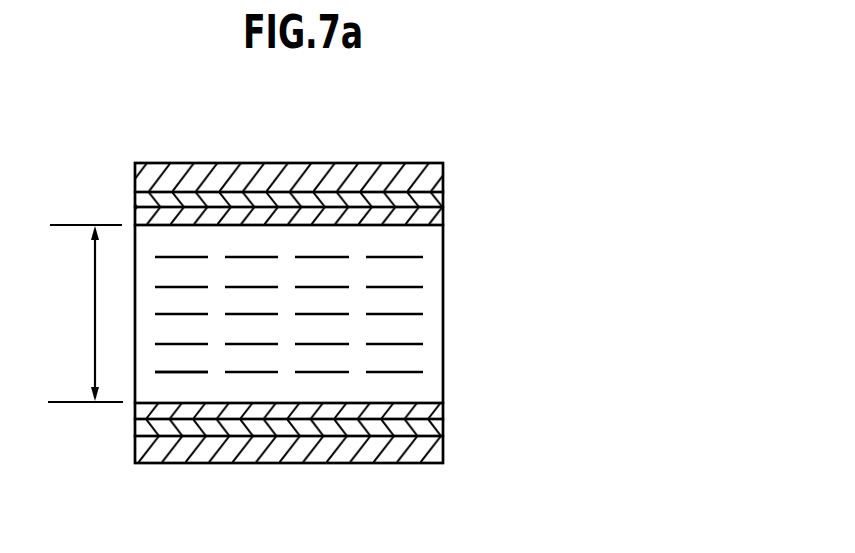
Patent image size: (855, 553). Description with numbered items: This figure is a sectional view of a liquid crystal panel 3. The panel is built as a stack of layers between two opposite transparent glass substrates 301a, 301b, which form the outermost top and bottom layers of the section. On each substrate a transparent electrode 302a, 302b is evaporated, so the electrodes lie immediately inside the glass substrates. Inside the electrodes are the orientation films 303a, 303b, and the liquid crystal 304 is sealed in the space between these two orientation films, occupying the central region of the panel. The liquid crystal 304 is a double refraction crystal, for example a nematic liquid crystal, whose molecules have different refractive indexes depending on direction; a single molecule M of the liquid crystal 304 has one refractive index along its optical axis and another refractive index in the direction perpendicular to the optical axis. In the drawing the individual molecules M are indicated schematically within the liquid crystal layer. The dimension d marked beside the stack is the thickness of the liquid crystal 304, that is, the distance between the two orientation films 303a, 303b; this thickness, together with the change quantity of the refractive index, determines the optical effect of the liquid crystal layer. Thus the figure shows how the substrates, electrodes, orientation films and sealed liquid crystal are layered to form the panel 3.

The liquid crystal panel 3 is at (350, 148).
The transparent glass substrate 301a is at (443, 182).
The transparent electrode 302a is at (443, 200).
The orientation film 303a is at (443, 216).
The liquid crystal 304 is at (452, 223).
The orientation film 303b is at (443, 414).
The transparent electrode 302b is at (443, 430).
The transparent glass substrate 301b is at (443, 457).
The thickness of the liquid crystal d is at (85, 313).
The molecule of the liquid crystal M is at (170, 371).